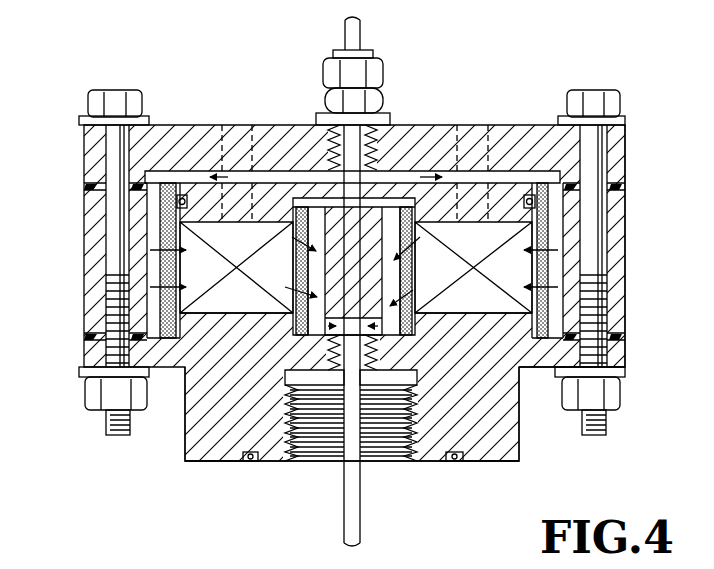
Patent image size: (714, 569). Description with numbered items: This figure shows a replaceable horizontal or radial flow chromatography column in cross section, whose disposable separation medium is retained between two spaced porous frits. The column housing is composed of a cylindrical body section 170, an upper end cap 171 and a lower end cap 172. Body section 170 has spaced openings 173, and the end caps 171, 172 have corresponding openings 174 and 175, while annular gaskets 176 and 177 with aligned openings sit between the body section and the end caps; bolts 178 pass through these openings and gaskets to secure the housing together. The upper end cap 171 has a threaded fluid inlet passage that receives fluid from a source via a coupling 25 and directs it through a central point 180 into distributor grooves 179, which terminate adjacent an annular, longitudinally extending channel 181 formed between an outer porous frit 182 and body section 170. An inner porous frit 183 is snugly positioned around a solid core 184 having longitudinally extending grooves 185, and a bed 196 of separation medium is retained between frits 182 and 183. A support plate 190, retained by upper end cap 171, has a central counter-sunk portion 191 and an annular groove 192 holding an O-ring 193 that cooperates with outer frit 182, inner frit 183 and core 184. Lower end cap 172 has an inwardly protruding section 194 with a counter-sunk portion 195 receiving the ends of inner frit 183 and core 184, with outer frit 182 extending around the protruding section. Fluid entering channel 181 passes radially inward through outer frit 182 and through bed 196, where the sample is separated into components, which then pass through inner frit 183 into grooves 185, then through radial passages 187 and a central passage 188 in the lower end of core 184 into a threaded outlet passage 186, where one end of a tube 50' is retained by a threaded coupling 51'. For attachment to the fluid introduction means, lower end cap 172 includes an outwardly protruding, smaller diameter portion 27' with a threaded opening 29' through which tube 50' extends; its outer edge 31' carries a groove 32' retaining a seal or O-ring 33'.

The coupling 25 is at (393, 55).
The outwardly protruding, smaller diameter portion 27' is at (352, 414).
The threaded opening or aperture 29' is at (351, 443).
The outer edge 31' is at (212, 479).
The groove 32' is at (488, 482).
The seal or O-ring 33' is at (460, 480).
The tube 50' is at (319, 337).
The threaded coupling 51' is at (378, 389).
The cylindrical body section 170 is at (618, 286).
The upper end cap, plate or section 171 is at (624, 163).
The lower end cap, plate or section 172 is at (624, 360).
The spaced openings or apertures 173 is at (104, 213).
The openings or apertures 174 is at (104, 153).
The openings or apertures 175 is at (104, 356).
The annular seal or gasket 176 is at (90, 188).
The annular seal or gasket 177 is at (84, 333).
The bolts 178 is at (115, 90).
The distributor grooves or channels 179 is at (292, 181).
The central point 180 is at (365, 183).
The annular, longitudinally extending channel 181 is at (152, 226).
The outer porous frit 182 is at (163, 252).
The inner porous frit 183 is at (298, 266).
The solid core or member 184 is at (375, 242).
The longitudinally extending grooves or channels 185 is at (318, 262).
The threaded outlet or collection passage 186 is at (325, 364).
The radially extending passages 187 is at (382, 345).
The central passage 188 is at (352, 318).
The support plate or member 190 is at (203, 210).
The central counter-sunk portion 191 is at (444, 183).
The annular groove 192 is at (528, 200).
The O-ring 193 is at (527, 198).
The inwardly protruding section 194 is at (236, 297).
The counter-sunk portion 195 is at (420, 316).
The bed of separation medium 196 is at (255, 246).